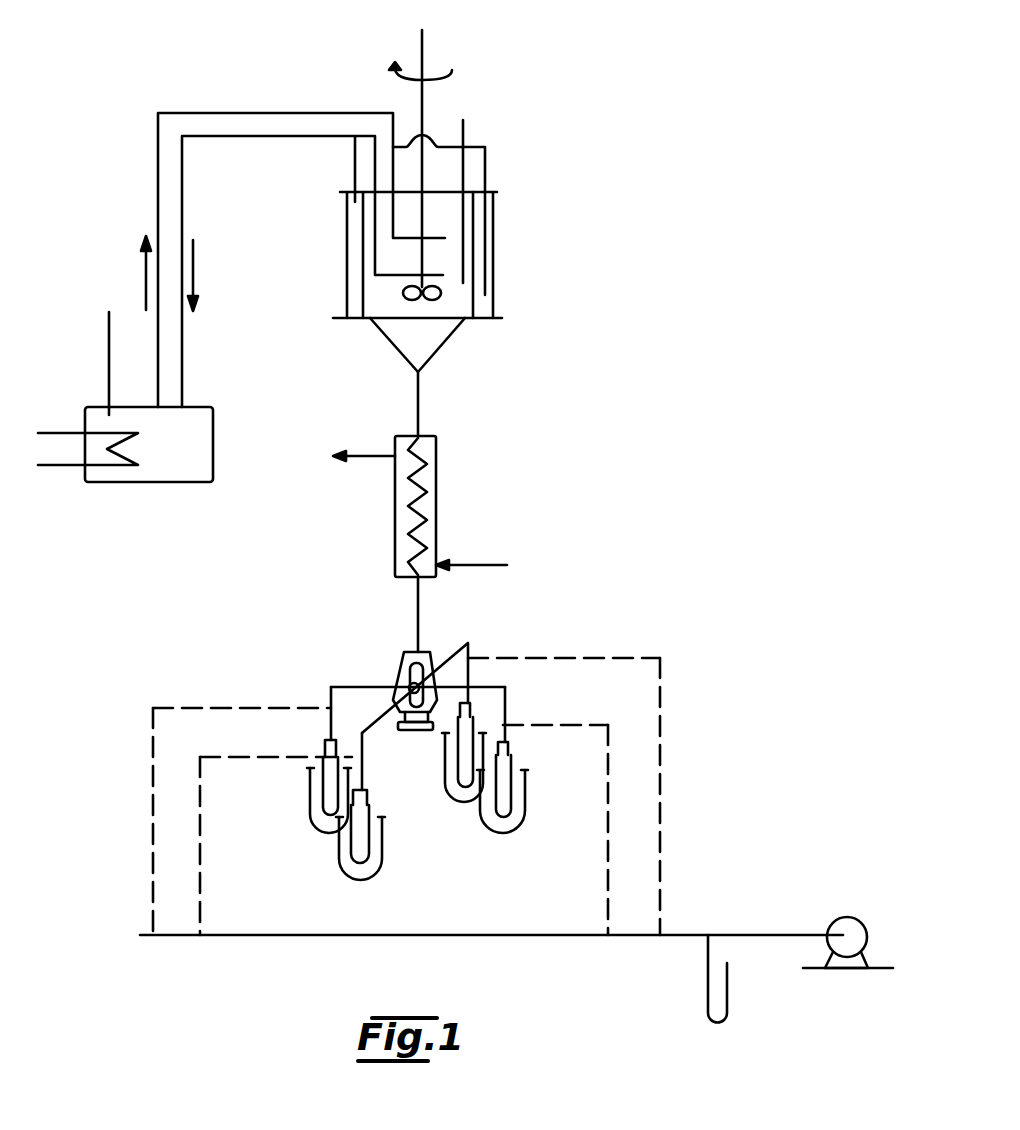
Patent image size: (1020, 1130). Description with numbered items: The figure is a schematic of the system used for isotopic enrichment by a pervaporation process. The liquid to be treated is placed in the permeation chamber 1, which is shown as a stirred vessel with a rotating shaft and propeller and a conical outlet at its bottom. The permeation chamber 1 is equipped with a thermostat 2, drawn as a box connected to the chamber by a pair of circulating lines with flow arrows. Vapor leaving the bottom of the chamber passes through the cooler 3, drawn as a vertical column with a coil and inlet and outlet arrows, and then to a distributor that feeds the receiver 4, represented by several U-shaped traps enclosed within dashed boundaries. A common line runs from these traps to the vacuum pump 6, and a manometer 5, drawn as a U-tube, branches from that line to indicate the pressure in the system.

The permeation chamber 1 is at (495, 221).
The thermostat 2 is at (195, 459).
The cooler 3 is at (436, 467).
The receiver 4 is at (330, 836).
The manometer 5 is at (708, 955).
The vacuum pump 6 is at (862, 920).